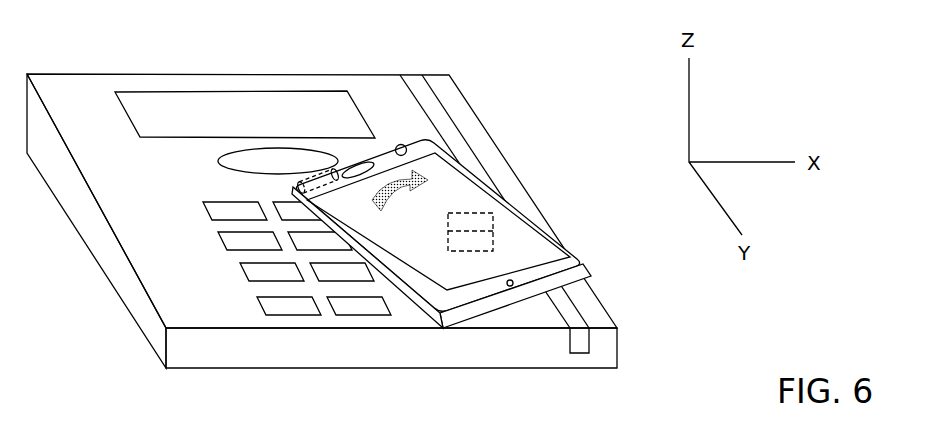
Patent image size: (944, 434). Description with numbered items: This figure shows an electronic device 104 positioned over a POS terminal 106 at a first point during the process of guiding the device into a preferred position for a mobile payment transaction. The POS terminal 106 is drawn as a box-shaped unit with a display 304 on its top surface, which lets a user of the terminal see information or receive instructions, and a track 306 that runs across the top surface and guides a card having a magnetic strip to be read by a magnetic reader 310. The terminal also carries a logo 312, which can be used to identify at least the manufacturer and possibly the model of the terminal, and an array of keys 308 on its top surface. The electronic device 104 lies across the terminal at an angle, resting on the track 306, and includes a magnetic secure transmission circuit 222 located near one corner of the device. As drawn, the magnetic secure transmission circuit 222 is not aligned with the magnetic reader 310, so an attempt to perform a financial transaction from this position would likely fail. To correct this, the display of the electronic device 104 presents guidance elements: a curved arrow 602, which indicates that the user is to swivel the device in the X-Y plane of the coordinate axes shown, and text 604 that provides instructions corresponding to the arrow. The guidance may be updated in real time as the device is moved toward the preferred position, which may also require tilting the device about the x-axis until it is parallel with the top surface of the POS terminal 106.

The POS terminal 106 is at (132, 73).
The display 304 is at (274, 91).
The track 306 is at (446, 108).
The logo 312 is at (217, 162).
The keys 308 is at (218, 256).
The electronic device 104 is at (468, 164).
The magnetic secure transmission circuit 222 is at (292, 193).
The arrows 602 is at (398, 156).
The text 604 is at (452, 198).
The magnetic reader 310 is at (466, 252).